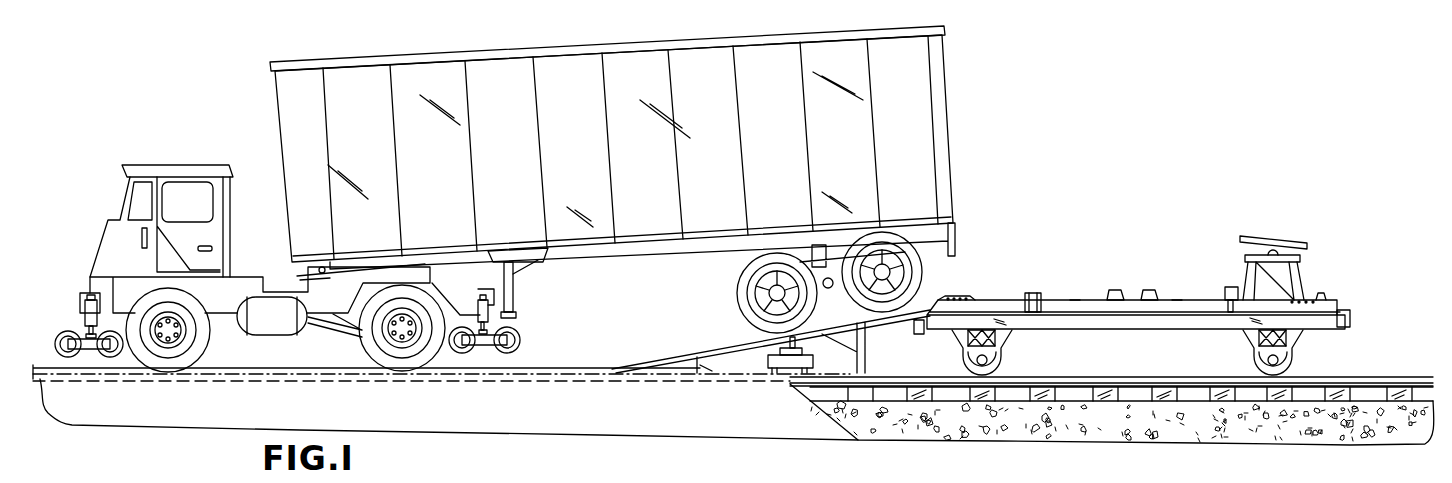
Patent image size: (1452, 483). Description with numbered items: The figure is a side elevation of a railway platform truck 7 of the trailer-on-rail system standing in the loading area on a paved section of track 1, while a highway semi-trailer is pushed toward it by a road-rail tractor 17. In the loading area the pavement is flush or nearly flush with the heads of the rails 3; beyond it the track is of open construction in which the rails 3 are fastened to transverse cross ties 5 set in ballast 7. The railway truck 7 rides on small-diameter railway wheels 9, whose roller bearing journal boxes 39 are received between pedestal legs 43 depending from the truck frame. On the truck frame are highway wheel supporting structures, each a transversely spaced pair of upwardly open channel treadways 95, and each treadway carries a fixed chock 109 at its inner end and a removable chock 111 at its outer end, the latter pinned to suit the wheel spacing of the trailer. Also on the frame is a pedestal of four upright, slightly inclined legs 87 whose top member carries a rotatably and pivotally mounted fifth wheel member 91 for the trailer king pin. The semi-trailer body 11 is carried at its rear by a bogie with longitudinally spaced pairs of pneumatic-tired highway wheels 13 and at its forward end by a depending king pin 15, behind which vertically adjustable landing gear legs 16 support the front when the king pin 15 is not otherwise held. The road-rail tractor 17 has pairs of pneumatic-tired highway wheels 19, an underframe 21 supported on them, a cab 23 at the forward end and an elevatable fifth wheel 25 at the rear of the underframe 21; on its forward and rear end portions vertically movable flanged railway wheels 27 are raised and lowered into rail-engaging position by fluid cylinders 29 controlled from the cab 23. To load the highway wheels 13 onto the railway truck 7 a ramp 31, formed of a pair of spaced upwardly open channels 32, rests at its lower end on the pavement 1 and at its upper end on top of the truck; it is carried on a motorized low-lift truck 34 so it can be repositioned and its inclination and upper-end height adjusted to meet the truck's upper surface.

The paved section of track 1 is at (563, 373).
The rails 3 is at (1067, 380).
The cross ties 5 is at (1163, 382).
The railway platform truck 7 is at (1155, 283).
The wheels 9 is at (1146, 352).
The semi-trailer body 11 is at (582, 152).
The highway wheels 13 is at (733, 298).
The king pin 15 is at (325, 266).
The landing gear legs 16 is at (517, 313).
The road-rail tractor 17 is at (312, 273).
The highway wheels 19 is at (213, 349).
The underframe 21 is at (338, 325).
The cab 23 is at (232, 202).
The elevatable fifth wheel 25 is at (392, 262).
The flanged railway wheels 27 is at (113, 356).
The fluid cylinders 29 is at (80, 304).
The ramp 31 is at (740, 360).
The upwardly open channels 32 is at (675, 352).
The motorized low-lift truck 34 is at (762, 363).
The roller bearing journal boxes 39 is at (1138, 322).
The pedestal legs 43 is at (1005, 336).
The legs 87 is at (1281, 245).
The fifth wheel member 91 is at (1278, 237).
The channel treadways 95 is at (1075, 298).
The fixed chock 109 is at (1148, 290).
The removable chock 111 is at (1323, 298).